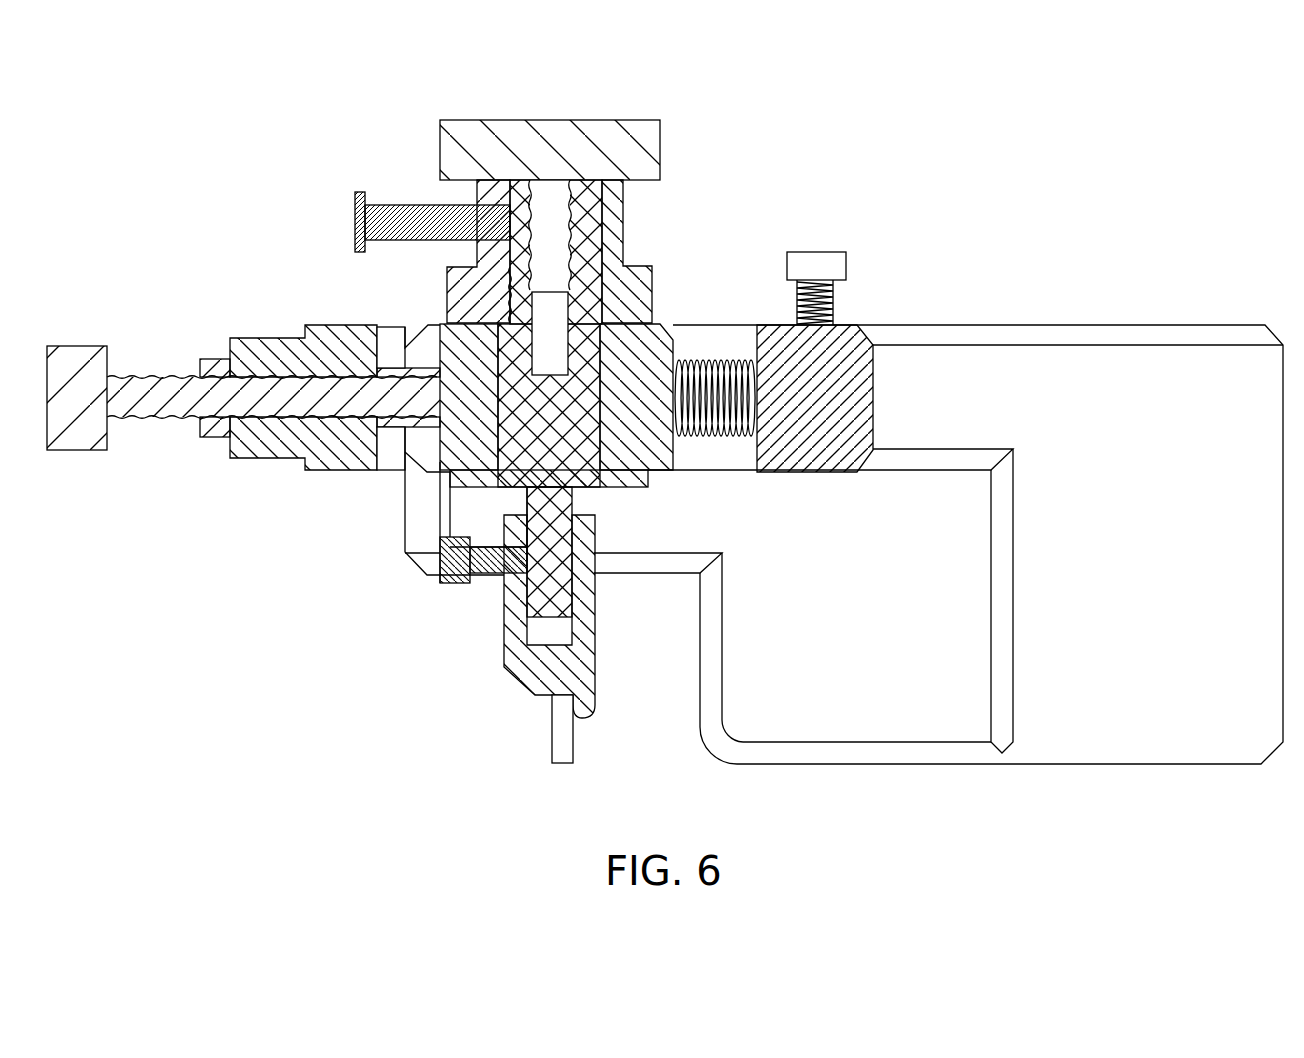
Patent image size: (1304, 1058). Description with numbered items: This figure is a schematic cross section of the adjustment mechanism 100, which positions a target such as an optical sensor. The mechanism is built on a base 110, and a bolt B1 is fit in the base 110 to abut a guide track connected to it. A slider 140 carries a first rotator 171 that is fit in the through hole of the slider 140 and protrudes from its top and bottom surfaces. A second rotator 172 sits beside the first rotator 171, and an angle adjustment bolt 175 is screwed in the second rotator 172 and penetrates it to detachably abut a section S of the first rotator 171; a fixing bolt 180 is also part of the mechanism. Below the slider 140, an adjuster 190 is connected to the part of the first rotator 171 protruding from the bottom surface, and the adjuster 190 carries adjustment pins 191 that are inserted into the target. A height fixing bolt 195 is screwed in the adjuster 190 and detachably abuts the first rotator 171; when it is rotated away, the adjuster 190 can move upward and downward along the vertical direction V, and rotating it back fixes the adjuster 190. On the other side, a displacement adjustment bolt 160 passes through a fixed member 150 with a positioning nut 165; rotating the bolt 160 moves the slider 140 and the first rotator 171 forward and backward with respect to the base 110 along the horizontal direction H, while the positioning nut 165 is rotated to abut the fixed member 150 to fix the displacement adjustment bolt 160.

The adjustment mechanism 100 is at (95, 90).
The base 110 is at (1055, 325).
The slider 140 is at (655, 350).
The fixed member 150 is at (322, 472).
The displacement adjustment bolt 160 is at (76, 452).
The positioning nut 165 is at (215, 358).
The first rotator 171 is at (510, 298).
The second rotator 172 is at (625, 203).
The angle adjustment bolt 175 is at (355, 216).
The fixing bolt 180 is at (540, 118).
The adjuster 190 is at (512, 688).
The adjustment pin 191 is at (562, 765).
The height fixing bolt 195 is at (452, 583).
The bolt B1 is at (815, 250).
The section S is at (510, 258).
The horizontal direction H is at (190, 490).
The vertical direction V is at (490, 487).